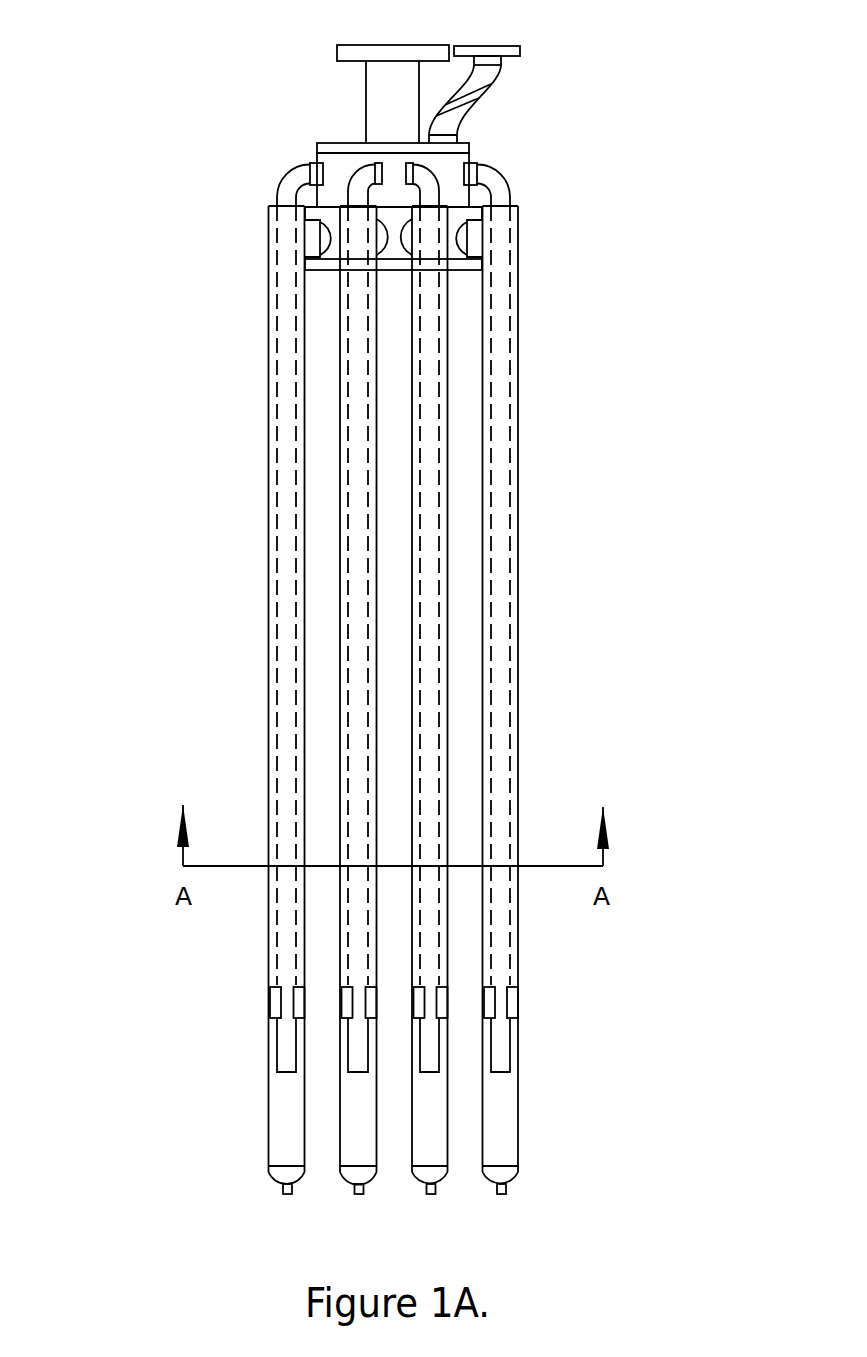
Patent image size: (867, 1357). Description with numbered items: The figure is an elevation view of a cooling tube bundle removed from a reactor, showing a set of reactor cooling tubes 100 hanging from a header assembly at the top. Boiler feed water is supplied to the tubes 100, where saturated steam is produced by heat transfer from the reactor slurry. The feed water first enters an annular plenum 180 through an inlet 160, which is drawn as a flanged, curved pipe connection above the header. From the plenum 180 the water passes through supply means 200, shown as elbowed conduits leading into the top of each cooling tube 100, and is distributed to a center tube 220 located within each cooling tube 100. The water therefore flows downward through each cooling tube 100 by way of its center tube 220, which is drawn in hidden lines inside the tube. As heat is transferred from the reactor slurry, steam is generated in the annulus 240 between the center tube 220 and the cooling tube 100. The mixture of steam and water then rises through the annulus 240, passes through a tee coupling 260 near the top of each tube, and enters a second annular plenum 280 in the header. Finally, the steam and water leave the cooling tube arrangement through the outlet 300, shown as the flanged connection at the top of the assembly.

The reactor cooling tube 100 is at (503, 1133).
The inlet 160 is at (523, 65).
The annular plenum 180 is at (457, 160).
The supply means 200 is at (505, 178).
The center tube 220 is at (498, 288).
The annulus 240 is at (272, 337).
The tee coupling 260 is at (270, 233).
The annular plenum 280 is at (333, 218).
The outlet 300 is at (337, 50).